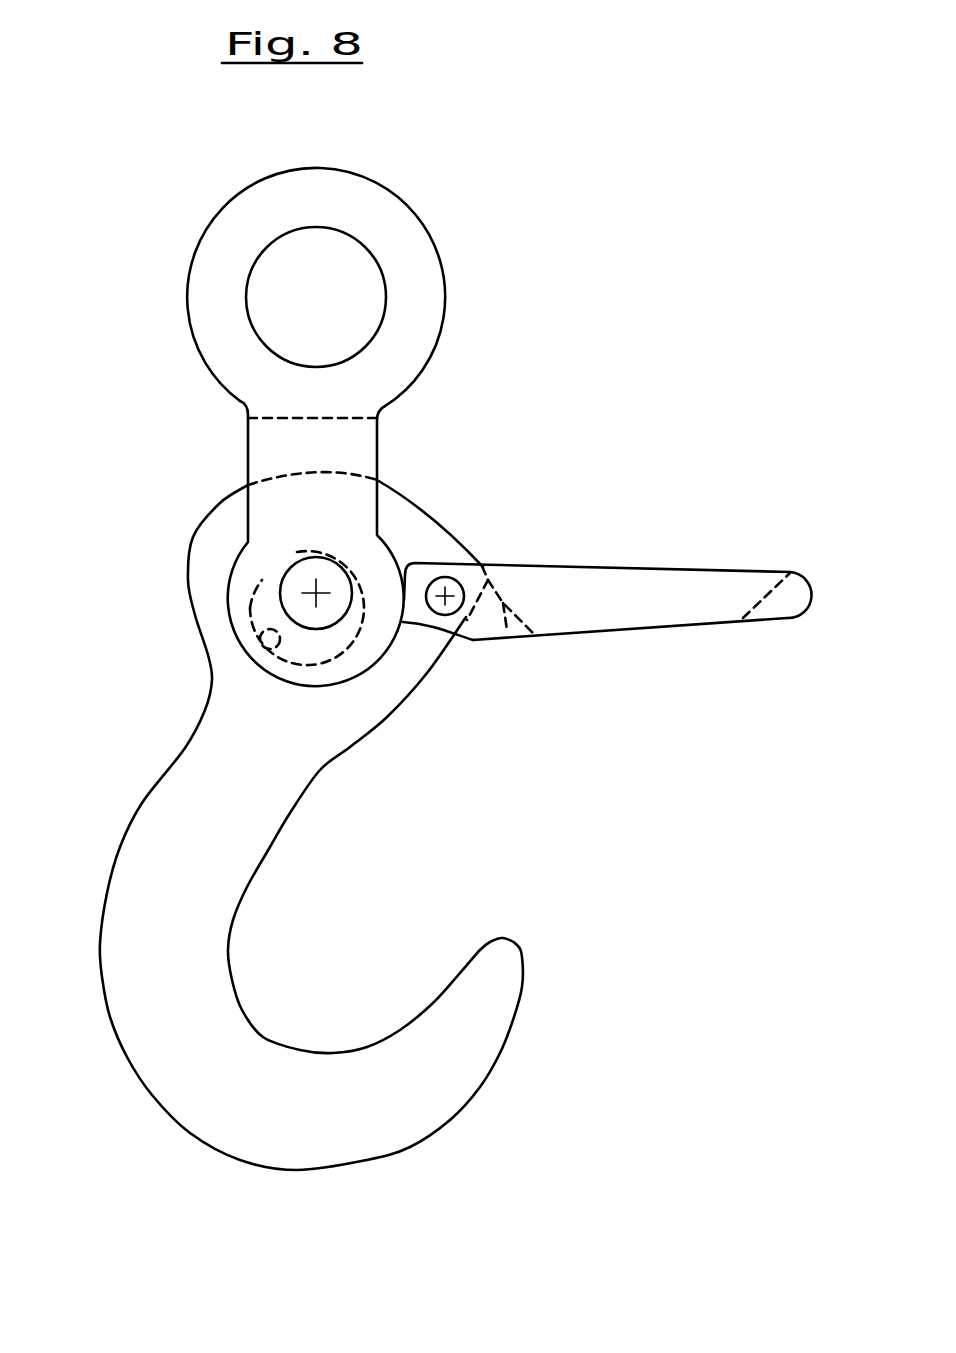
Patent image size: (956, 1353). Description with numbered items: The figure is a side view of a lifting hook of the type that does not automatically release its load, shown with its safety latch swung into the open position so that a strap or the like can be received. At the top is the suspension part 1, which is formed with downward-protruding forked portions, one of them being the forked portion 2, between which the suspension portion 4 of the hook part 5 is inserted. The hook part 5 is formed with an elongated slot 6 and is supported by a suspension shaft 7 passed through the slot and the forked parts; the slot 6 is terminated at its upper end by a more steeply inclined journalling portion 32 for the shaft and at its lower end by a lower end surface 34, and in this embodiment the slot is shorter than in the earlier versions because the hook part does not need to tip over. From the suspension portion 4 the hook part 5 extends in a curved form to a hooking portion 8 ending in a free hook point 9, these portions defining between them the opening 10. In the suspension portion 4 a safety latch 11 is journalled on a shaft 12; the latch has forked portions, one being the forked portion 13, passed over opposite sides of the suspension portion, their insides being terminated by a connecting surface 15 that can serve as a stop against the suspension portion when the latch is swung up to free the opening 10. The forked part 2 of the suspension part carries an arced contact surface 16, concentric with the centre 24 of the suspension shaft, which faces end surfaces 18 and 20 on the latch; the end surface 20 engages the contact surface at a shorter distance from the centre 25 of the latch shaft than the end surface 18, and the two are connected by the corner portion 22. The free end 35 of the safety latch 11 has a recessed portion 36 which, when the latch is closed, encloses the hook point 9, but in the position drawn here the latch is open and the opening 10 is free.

The suspension part 1 is at (245, 422).
The forked portion 2 is at (270, 446).
The suspension portion 4 is at (403, 512).
The hook part 5 is at (137, 805).
The elongated slot 6 is at (297, 553).
The suspension shaft 7 is at (330, 607).
The hooking portion 8 is at (242, 1115).
The hook point 9 is at (505, 938).
The opening 10 is at (435, 823).
The safety latch 11 is at (546, 559).
The shaft 12 is at (457, 627).
The forked portion 13 is at (633, 587).
The connecting surface 15 is at (533, 633).
The contact surface 16 is at (370, 667).
The end surface 18 is at (400, 560).
The end surface 20 is at (420, 630).
The corner portion 22 is at (403, 622).
The centre of the suspension shaft 24 is at (315, 593).
The centre of the safety latch shaft 25 is at (455, 583).
The journalling portion 32 is at (307, 540).
The lower end surface 34 is at (282, 650).
The free end 35 is at (815, 598).
The recessed portion 36 is at (785, 600).